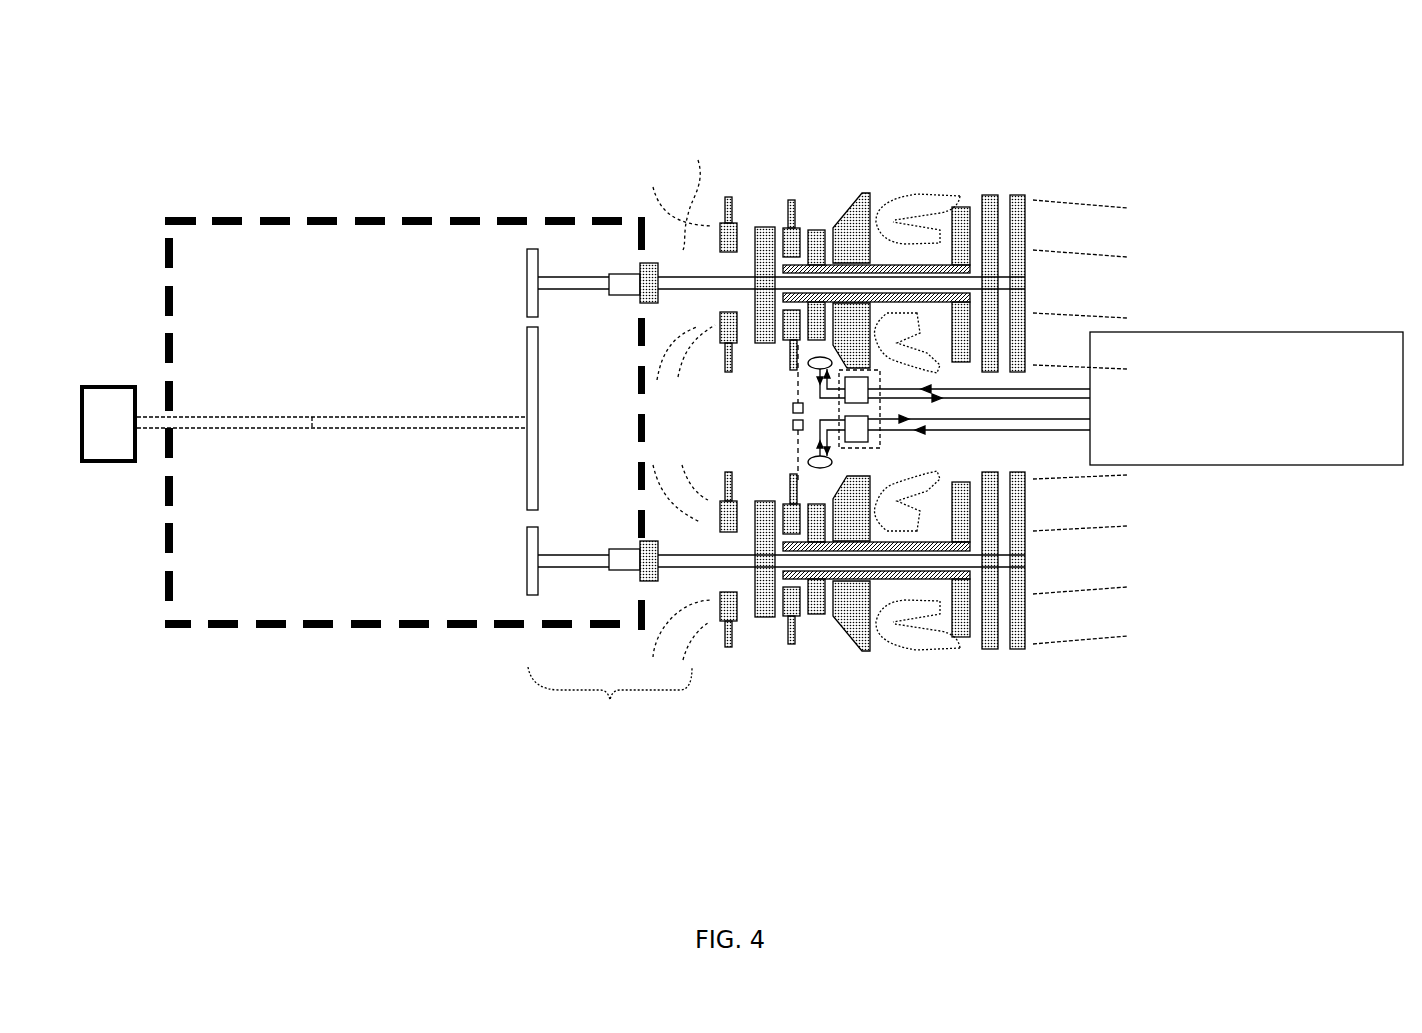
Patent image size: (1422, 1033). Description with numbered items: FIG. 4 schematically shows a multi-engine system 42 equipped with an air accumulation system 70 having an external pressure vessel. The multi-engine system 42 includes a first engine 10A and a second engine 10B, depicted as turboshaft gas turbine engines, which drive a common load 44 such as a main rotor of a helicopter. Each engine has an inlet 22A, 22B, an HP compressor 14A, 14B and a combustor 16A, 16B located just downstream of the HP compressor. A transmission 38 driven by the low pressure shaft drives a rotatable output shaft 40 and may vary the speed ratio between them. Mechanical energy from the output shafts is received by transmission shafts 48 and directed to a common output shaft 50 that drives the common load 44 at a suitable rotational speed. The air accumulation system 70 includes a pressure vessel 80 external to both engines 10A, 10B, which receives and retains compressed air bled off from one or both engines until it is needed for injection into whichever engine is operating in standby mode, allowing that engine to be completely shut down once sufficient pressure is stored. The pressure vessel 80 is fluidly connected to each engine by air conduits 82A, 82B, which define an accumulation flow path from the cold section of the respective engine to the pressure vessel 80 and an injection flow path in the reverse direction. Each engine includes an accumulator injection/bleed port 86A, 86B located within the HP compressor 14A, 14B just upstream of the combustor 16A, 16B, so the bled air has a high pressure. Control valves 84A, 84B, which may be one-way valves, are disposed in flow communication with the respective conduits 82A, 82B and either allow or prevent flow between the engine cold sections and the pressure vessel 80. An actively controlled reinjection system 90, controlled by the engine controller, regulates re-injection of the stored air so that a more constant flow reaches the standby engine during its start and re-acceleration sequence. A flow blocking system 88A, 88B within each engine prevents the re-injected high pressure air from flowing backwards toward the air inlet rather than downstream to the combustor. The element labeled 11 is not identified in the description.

The first engine 10A is at (892, 221).
The second engine 10B is at (892, 623).
The airflow 11 is at (700, 192).
The HP compressor 14A is at (845, 197).
The HP compressor 14B is at (837, 643).
The combustor 16A is at (912, 200).
The combustor 16B is at (905, 652).
The inlet 22A is at (653, 187).
The inlet 22B is at (663, 640).
The transmission 38 is at (609, 490).
The output shaft 40 is at (318, 632).
The multi-engine system 42 is at (224, 147).
The common load 44 is at (108, 383).
The transmission shaft 48 is at (573, 277).
The common output shaft 50 is at (150, 432).
The air accumulation system 70 is at (1193, 224).
The pressure vessel 80 is at (1230, 328).
The air conduit 82A is at (1053, 381).
The air conduit 82B is at (1048, 433).
The control valve 84A is at (853, 376).
The control valve 84B is at (863, 448).
The accumulator injection/bleed port 86A is at (817, 357).
The accumulator injection/bleed port 86B is at (817, 468).
The flow blocking system 88A is at (795, 404).
The flow blocking system 88B is at (795, 428).
The active control system 90 is at (877, 448).